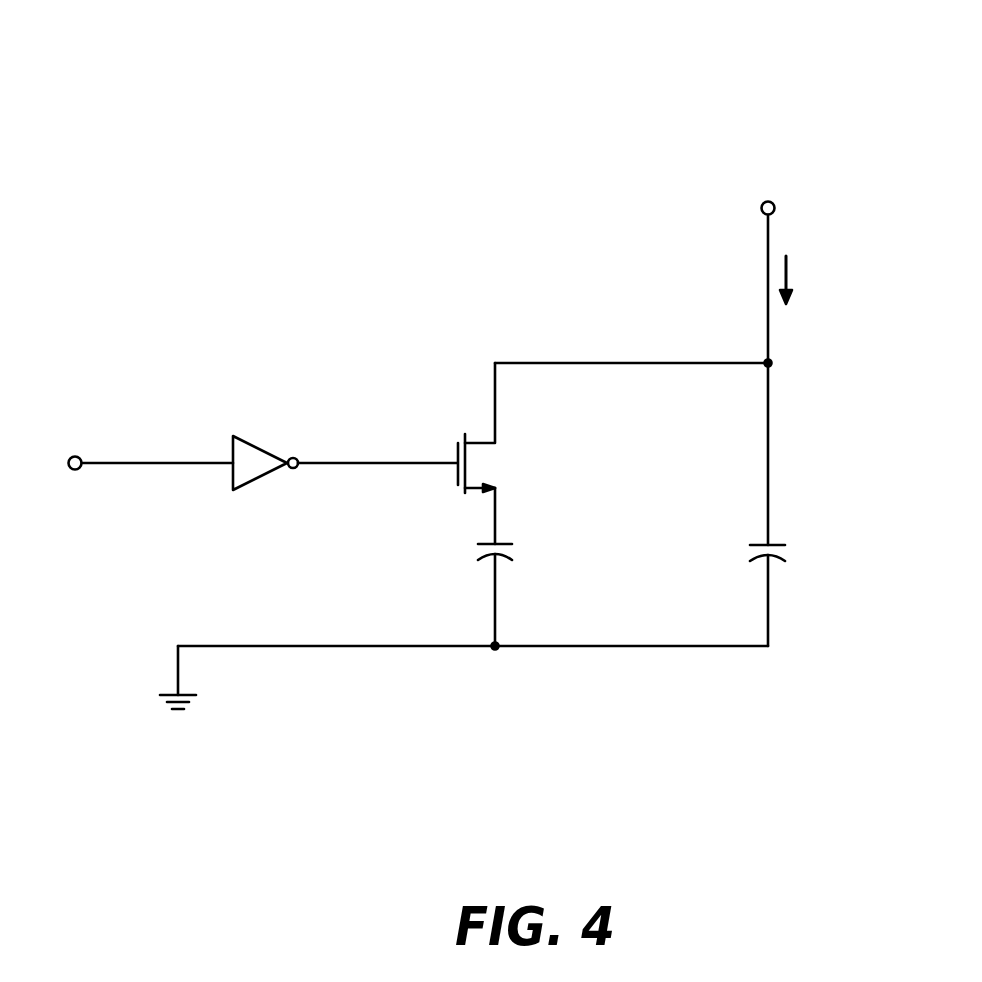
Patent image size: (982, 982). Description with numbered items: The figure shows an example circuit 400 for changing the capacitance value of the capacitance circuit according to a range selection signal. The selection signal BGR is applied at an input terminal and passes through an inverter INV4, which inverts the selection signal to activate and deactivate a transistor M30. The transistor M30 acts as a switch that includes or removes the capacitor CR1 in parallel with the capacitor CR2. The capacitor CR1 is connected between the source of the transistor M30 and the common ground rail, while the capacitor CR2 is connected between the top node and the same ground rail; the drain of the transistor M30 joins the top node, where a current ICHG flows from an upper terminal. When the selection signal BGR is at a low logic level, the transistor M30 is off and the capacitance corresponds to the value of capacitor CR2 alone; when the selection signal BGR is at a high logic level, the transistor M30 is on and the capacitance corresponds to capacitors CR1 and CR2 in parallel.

The circuit 400 is at (458, 359).
The selection signal BGR is at (146, 448).
The inverter INV4 is at (345, 439).
The transistor M30 is at (508, 453).
The capacitor CR1 is at (523, 586).
The capacitor CR2 is at (795, 586).
The charging current ICHG is at (816, 277).